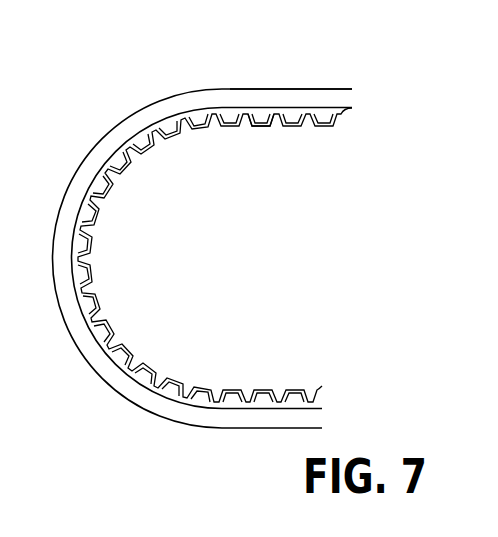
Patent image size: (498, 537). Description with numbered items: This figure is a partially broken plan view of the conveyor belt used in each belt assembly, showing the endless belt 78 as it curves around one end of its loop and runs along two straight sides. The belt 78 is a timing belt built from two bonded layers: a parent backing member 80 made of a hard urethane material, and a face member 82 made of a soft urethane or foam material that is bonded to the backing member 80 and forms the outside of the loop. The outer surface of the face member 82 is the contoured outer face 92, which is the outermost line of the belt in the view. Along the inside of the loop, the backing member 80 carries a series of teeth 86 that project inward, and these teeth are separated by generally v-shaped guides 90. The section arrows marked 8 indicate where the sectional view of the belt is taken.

The endless belt 78 is at (117, 100).
The belt body (inner layer) 92 is at (217, 88).
The outer surface of belt 82 is at (318, 88).
The teeth 80 is at (323, 132).
The fabric cover layer on teeth 86 is at (349, 114).
The tooth land / groove 90 is at (263, 130).
The section line for FIG. 8 is at (227, 375).